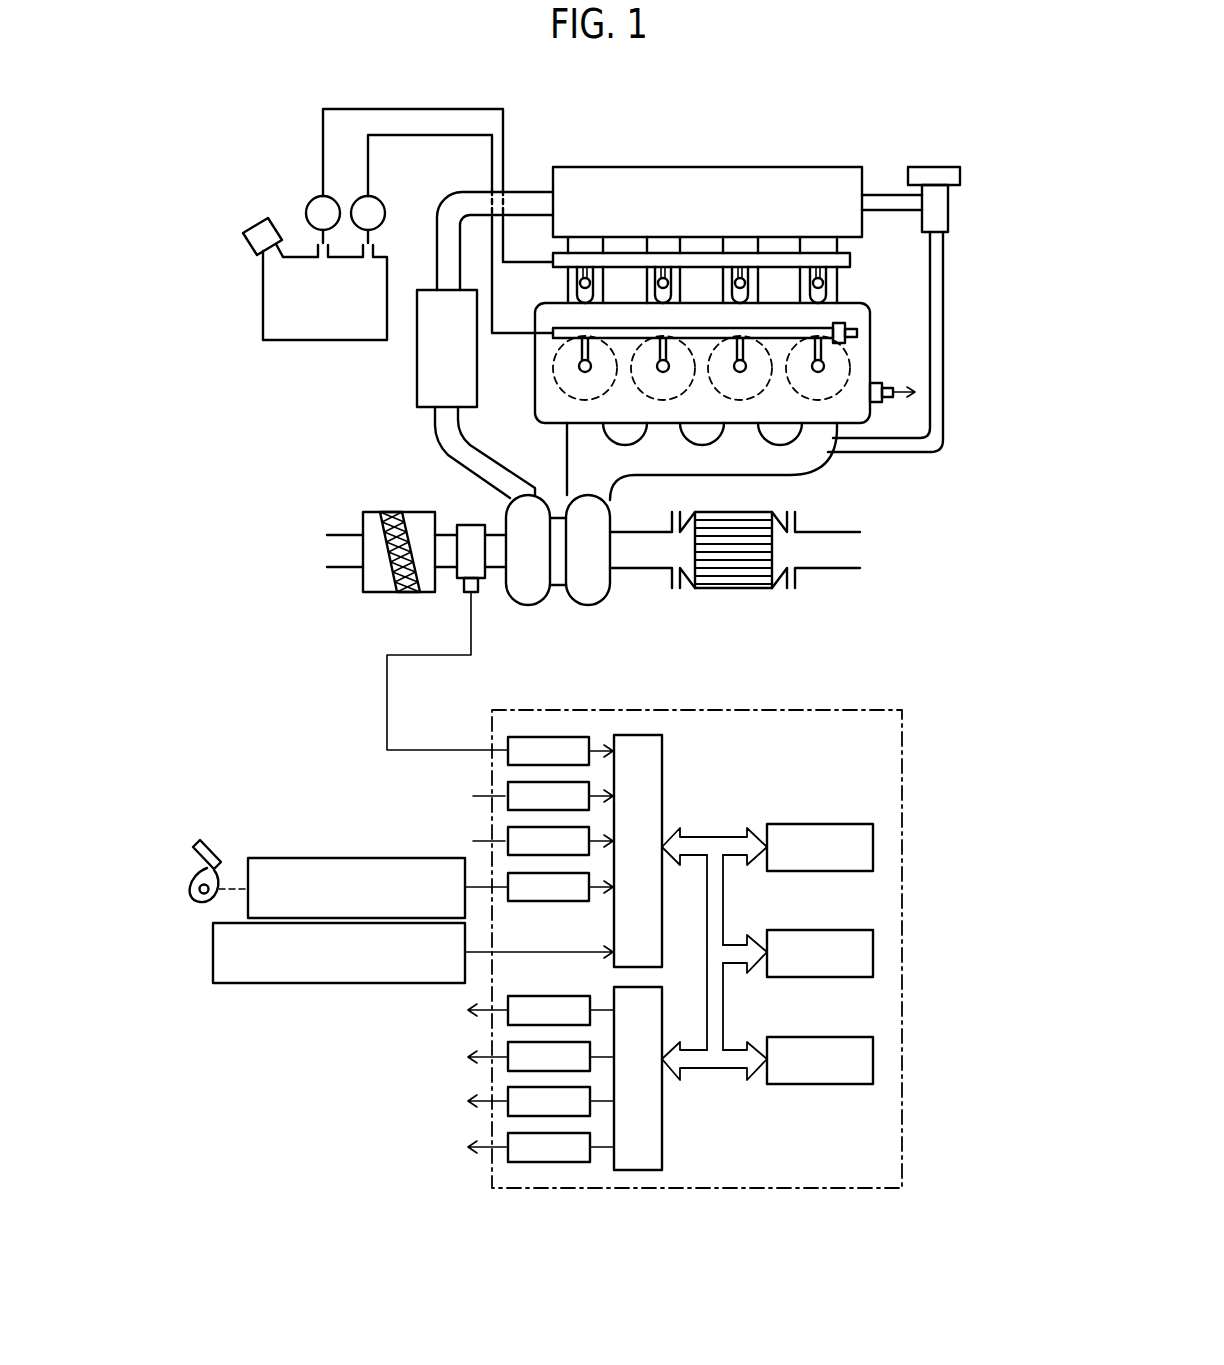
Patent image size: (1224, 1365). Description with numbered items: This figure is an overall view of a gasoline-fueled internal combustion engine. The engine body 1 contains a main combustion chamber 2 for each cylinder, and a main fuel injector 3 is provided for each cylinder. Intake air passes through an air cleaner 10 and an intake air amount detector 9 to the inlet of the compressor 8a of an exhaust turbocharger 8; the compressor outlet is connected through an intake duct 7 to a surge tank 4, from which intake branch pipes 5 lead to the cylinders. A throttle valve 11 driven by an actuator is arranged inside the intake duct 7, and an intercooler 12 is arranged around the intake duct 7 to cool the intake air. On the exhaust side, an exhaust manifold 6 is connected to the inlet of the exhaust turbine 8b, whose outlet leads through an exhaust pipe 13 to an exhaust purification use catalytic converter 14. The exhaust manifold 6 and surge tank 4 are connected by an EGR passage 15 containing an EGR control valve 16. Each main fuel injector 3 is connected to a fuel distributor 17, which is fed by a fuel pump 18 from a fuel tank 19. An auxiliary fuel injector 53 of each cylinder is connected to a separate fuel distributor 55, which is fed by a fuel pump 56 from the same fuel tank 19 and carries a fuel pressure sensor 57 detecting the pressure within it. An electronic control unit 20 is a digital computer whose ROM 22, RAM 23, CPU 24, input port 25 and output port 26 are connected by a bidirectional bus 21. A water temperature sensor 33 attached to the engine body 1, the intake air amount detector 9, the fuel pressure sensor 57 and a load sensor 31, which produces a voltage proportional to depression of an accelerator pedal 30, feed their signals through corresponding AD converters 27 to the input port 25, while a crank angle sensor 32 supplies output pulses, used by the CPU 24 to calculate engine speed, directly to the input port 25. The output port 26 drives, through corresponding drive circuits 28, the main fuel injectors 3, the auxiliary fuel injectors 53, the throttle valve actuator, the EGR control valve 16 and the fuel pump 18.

The engine body 1 is at (873, 343).
The main combustion chamber 2 is at (560, 415).
The main fuel injector 3 is at (582, 292).
The surge tank 4 is at (778, 180).
The intake branch pipes 5 is at (575, 247).
The exhaust manifold 6 is at (805, 462).
The intake duct 7 is at (437, 260).
The exhaust turbocharger 8 is at (561, 600).
The compressor 8a is at (520, 605).
The exhaust turbine 8b is at (598, 605).
The intake air amount detector 9 is at (470, 525).
The air cleaner 10 is at (365, 512).
The throttle valve 11 is at (524, 206).
The intercooler 12 is at (417, 378).
The exhaust pipe 13 is at (642, 565).
The exhaust purification use catalytic converter 14 is at (735, 578).
The EGR passage 15 is at (945, 415).
The EGR control valve 16 is at (950, 208).
The fuel distributor 17 is at (697, 258).
The fuel pump 18 is at (311, 202).
The fuel tank 19 is at (263, 293).
The electronic control unit 20 is at (908, 750).
The bidirectional bus 21 is at (720, 838).
The ROM 22 is at (840, 824).
The RAM 23 is at (840, 930).
The CPU 24 is at (840, 1037).
The input port 25 is at (665, 752).
The output port 26 is at (665, 1150).
The AD converter 27 is at (508, 873).
The drive circuit 28 is at (508, 1133).
The accelerator pedal 30 is at (213, 840).
The load sensor 31 is at (296, 858).
The crank angle sensor 32 is at (272, 985).
The water temperature sensor 33 is at (905, 386).
The auxiliary fuel injector 53 is at (580, 364).
The fuel distributor 55 is at (553, 336).
The fuel pump 56 is at (380, 203).
The fuel pressure sensor 57 is at (845, 325).